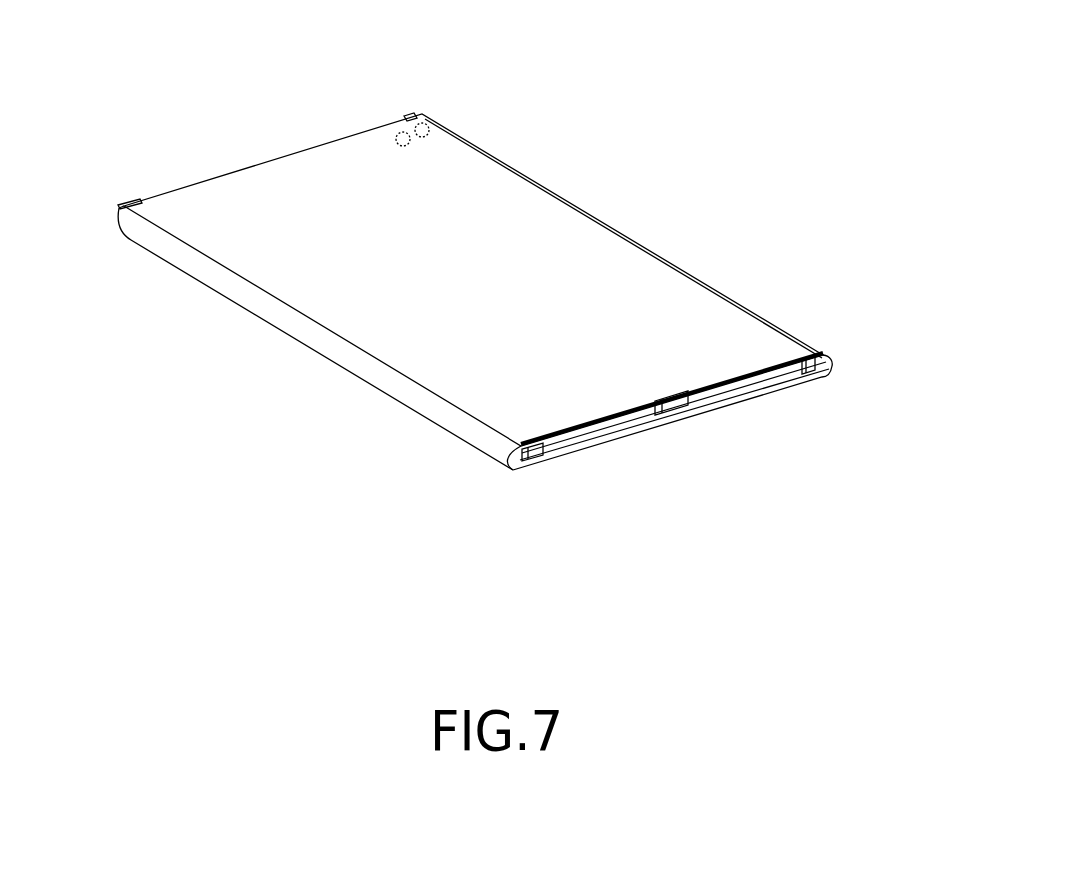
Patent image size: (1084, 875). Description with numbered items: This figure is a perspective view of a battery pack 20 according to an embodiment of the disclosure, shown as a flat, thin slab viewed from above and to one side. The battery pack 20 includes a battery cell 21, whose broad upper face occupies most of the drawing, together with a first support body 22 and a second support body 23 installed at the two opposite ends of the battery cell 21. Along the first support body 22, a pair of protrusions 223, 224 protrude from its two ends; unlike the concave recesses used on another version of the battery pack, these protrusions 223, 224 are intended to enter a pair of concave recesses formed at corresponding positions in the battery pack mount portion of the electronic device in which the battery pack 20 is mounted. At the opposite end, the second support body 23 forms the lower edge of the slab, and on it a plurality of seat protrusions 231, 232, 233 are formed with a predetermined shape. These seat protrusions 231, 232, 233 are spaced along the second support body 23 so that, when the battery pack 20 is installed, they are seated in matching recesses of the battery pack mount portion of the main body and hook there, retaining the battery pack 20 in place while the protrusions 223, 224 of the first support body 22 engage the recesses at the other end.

The battery pack 20 is at (478, 263).
The battery cell 21 is at (685, 300).
The first support body 22 is at (303, 147).
The second support body 23 is at (695, 407).
The protrusion 223 is at (407, 112).
The protrusion 224 is at (130, 206).
The seat protrusion 231 is at (833, 363).
The seat protrusion 232 is at (673, 408).
The seat protrusion 233 is at (533, 452).